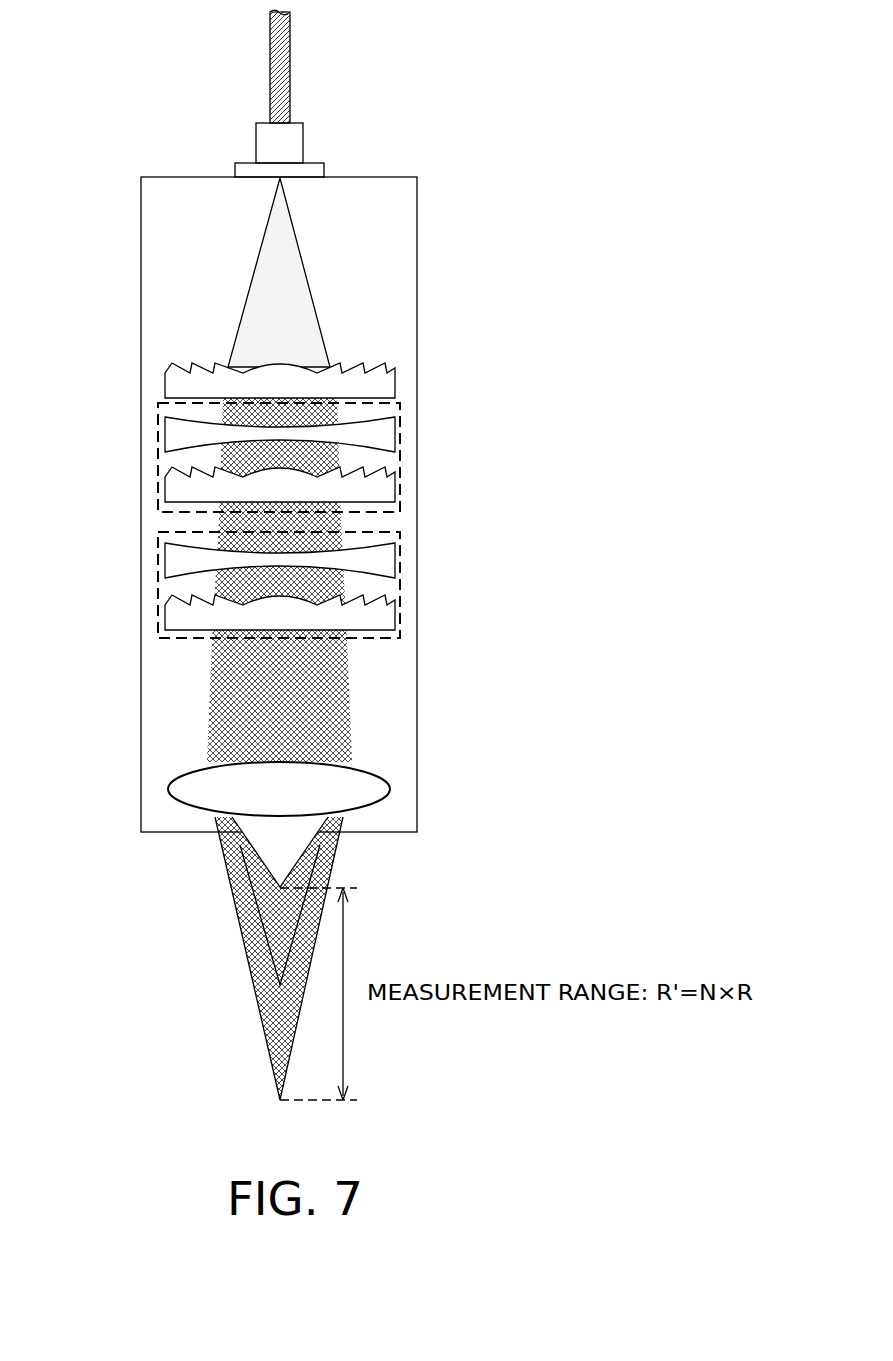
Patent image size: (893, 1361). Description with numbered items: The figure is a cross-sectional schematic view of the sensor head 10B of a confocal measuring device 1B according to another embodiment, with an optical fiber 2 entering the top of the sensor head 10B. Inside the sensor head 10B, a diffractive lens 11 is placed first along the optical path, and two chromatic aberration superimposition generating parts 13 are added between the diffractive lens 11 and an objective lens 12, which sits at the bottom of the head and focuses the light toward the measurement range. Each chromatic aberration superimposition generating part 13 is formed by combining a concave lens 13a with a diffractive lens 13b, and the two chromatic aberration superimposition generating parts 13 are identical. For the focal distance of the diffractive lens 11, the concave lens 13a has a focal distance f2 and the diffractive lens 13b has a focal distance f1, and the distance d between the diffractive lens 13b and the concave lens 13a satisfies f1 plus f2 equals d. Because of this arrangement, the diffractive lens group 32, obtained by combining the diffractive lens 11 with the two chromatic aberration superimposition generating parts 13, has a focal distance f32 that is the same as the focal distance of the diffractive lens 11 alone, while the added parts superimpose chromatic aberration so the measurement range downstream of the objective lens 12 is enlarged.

The confocal measuring device 1B is at (378, 57).
The optical fiber 2 is at (290, 45).
The sensor head 10B is at (417, 212).
The diffractive lens 11 is at (383, 384).
The objective lens 12 is at (380, 790).
The chromatic aberration superimposition generating part 13 is at (277, 520).
The concave lens 13a is at (165, 435).
The diffractive lens 13b is at (165, 489).
The diffractive lens group 32 is at (299, 502).